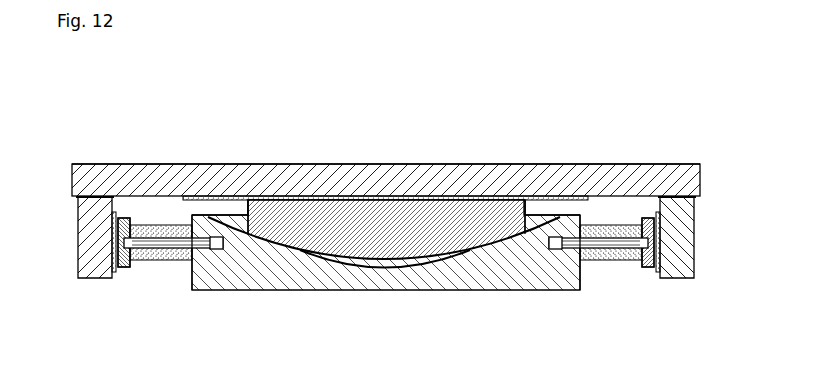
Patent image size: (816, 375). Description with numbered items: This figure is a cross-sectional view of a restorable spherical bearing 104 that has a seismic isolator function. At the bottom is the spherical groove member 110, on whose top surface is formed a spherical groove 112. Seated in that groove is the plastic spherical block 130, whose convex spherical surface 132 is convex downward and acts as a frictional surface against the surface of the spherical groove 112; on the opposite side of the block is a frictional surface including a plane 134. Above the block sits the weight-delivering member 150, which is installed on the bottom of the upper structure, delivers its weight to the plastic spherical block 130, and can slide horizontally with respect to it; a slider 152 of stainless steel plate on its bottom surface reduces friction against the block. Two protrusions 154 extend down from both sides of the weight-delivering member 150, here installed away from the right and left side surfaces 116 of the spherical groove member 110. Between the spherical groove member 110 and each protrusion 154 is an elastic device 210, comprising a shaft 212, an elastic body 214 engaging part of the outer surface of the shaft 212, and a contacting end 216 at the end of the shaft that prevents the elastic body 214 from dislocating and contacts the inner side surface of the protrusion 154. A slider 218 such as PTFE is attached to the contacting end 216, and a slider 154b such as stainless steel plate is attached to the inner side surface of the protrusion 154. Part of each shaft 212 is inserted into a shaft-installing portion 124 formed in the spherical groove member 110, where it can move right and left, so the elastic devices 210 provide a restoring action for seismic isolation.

The restorable spherical bearing 104 is at (577, 100).
The spherical groove member 110 is at (473, 277).
The spherical groove 112 is at (402, 247).
The side surfaces 116 is at (188, 262).
The shaft-installing portion 124 is at (213, 237).
The plastic spherical block 130 is at (378, 221).
The convex spherical surface 132 is at (362, 255).
The plane 134 is at (350, 197).
The weight-delivering member 150 is at (434, 176).
The slider 152 is at (317, 197).
The protrusion 154 is at (85, 278).
The slider 154b is at (88, 217).
The elastic device 210 is at (140, 265).
The shaft 212 is at (212, 237).
The elastic body 214 is at (158, 222).
The contacting end 216 is at (132, 222).
The slider 218 is at (113, 222).